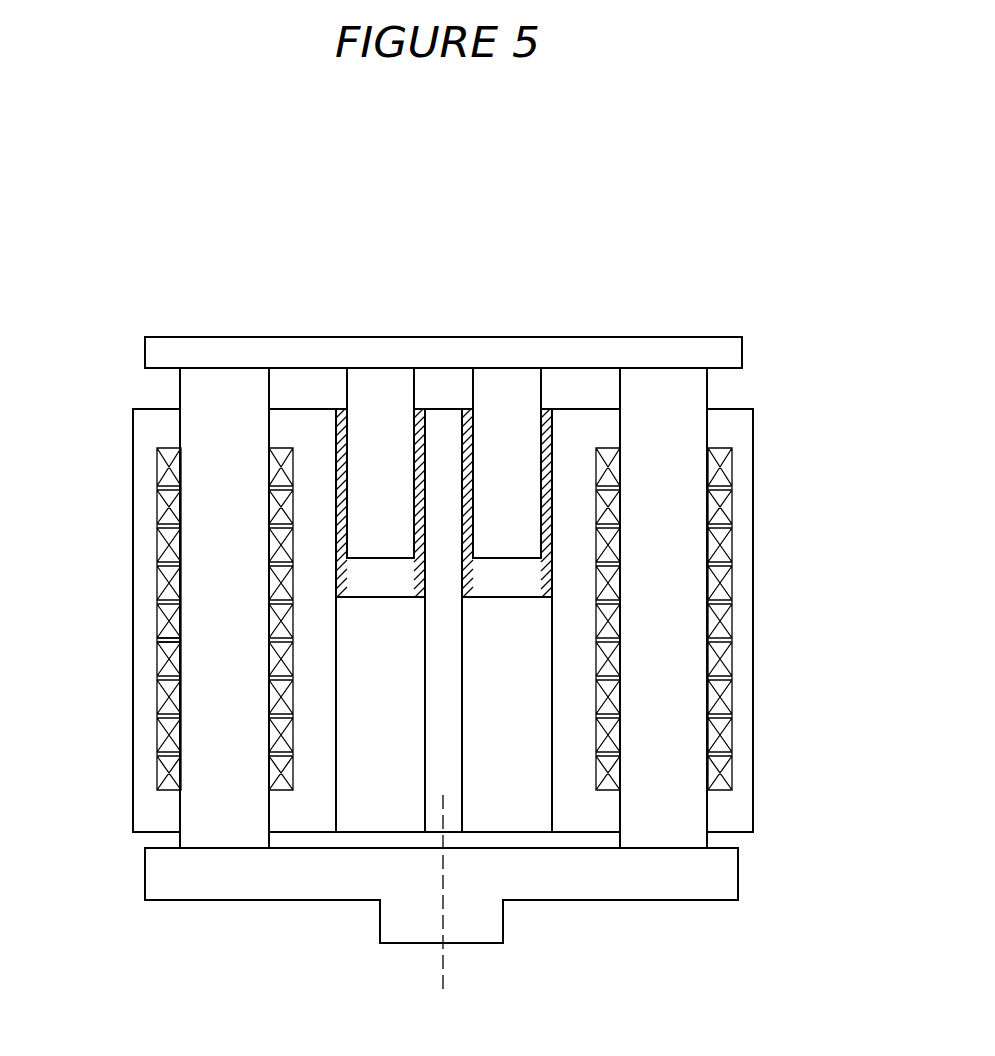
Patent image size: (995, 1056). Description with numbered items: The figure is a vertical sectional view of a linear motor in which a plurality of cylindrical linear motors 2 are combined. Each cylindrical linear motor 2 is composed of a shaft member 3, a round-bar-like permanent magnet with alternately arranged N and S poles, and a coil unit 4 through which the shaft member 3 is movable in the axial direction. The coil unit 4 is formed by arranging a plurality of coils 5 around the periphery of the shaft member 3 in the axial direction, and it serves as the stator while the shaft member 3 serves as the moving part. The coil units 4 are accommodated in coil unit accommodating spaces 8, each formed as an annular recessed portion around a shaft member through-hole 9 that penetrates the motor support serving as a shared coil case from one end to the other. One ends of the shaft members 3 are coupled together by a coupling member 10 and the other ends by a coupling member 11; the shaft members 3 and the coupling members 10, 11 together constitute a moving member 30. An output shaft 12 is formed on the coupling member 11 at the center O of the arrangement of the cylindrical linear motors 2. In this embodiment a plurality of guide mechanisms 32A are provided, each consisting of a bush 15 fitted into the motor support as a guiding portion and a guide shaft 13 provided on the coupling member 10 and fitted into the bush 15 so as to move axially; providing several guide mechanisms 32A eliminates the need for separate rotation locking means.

The cylindrical linear motor 2 is at (80, 566).
The shaft member 3 is at (205, 658).
The coil unit 4 is at (153, 571).
The coil 5 is at (157, 503).
The coil unit accommodating space 8 is at (165, 704).
The shaft member through-hole 9 is at (180, 428).
The coupling member 10 is at (724, 348).
The coupling member 11 is at (712, 875).
The output shaft 12 is at (403, 918).
The guide shaft 13 is at (367, 387).
The bush 15 is at (346, 408).
The moving member 30 is at (703, 906).
The guide mechanism 32A is at (280, 277).
The center O is at (443, 898).